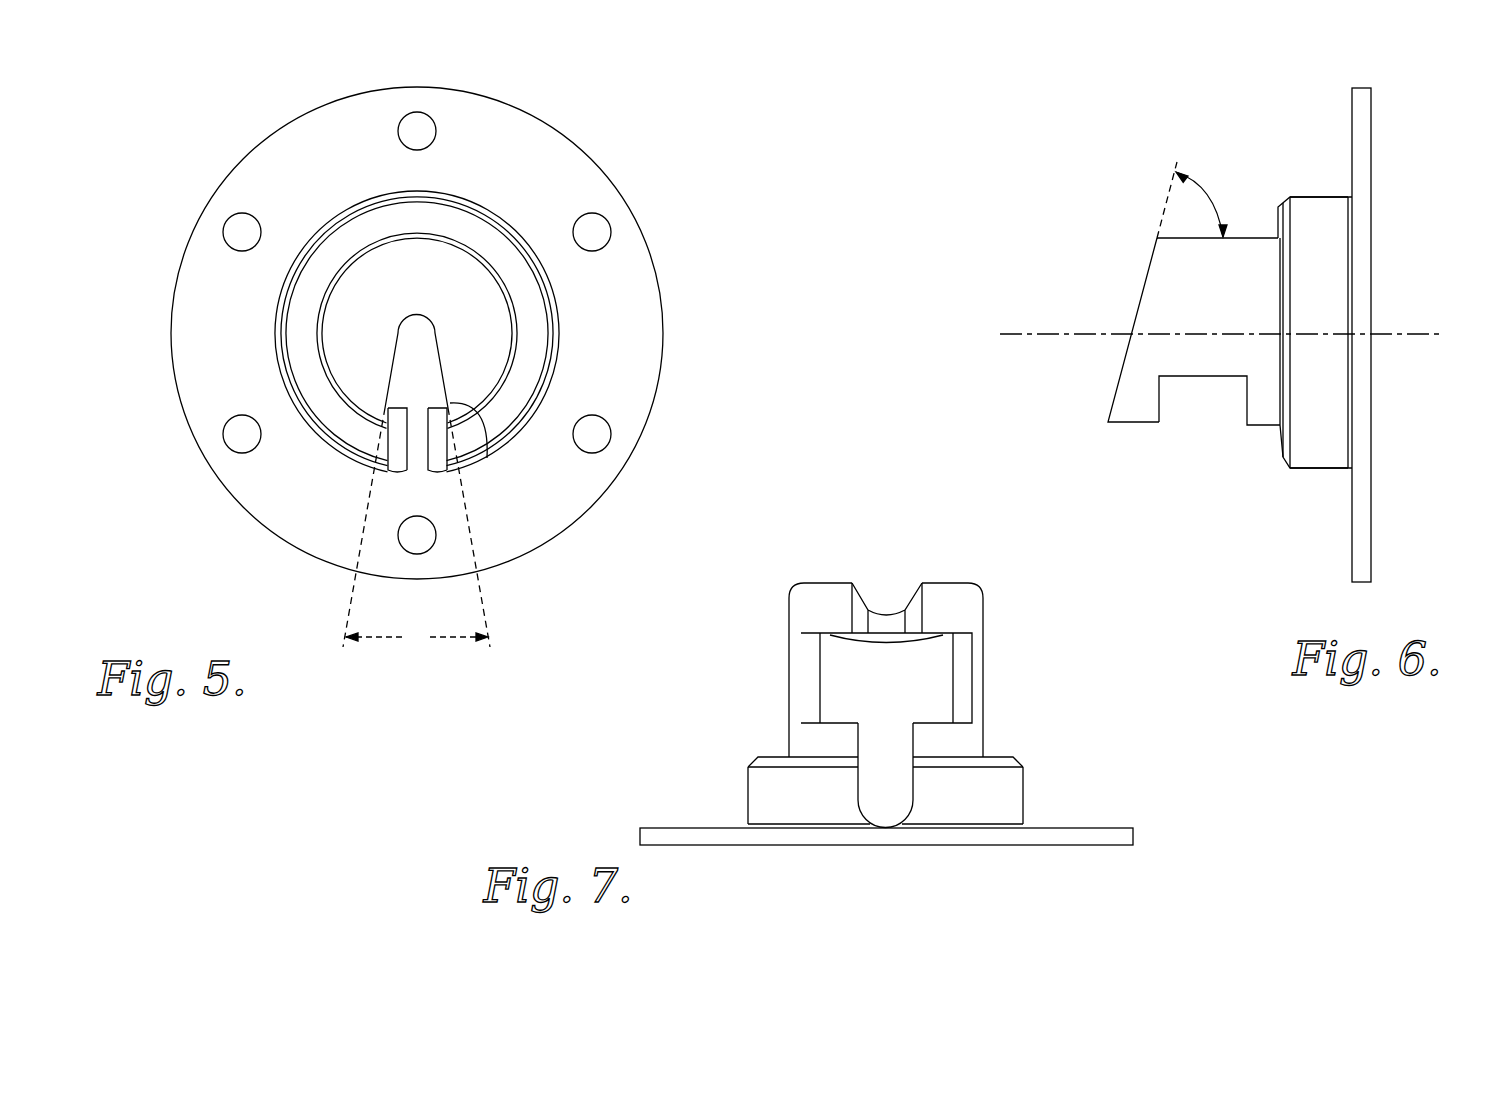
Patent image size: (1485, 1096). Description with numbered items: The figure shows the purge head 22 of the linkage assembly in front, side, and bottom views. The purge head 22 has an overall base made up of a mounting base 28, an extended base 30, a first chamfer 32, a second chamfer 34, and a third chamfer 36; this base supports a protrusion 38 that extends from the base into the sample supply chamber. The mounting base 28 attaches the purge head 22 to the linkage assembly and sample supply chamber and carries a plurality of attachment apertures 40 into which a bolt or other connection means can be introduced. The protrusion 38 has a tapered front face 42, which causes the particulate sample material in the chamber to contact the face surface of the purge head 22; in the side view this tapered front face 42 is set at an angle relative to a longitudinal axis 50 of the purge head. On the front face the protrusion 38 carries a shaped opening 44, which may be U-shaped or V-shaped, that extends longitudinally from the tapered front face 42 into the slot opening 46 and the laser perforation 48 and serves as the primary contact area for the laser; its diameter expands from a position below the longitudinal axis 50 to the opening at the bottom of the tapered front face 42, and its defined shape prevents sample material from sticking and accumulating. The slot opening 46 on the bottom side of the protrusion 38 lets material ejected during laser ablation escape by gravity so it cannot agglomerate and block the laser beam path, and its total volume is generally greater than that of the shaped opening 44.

In FIG. 5, the purge head 22 is at (438, 351).
In FIG. 6, the purge head 22 is at (1229, 318).
In FIG. 7, the purge head 22 is at (949, 692).
In FIG. 5, the mounting base 28 is at (663, 300).
In FIG. 6, the mounting base 28 is at (1371, 110).
In FIG. 7, the mounting base 28 is at (1130, 830).
In FIG. 5, the extended base 30 is at (303, 352).
In FIG. 6, the extended base 30 is at (1313, 468).
In FIG. 7, the extended base 30 is at (1025, 783).
In FIG. 6, the first chamfer 32 is at (1350, 470).
In FIG. 7, the first chamfer 32 is at (1025, 826).
In FIG. 6, the second chamfer 34 is at (1285, 462).
In FIG. 7, the second chamfer 34 is at (1018, 760).
In FIG. 7, the third chamfer 36 is at (983, 757).
In FIG. 6, the protrusion 38 is at (1252, 237).
In FIG. 7, the protrusion 38 is at (985, 623).
In FIG. 5, the attachment apertures 40 is at (410, 113).
In FIG. 5, the tapered front face 42 is at (516, 349).
In FIG. 6, the tapered front face 42 is at (1146, 280).
In FIG. 7, the tapered front face 42 is at (945, 583).
In FIG. 5, the shaped opening 44 is at (417, 440).
In FIG. 7, the shaped opening 44 is at (883, 575).
In FIG. 6, the slot opening 46 is at (1172, 422).
In FIG. 7, the slot opening 46 is at (905, 679).
In FIG. 5, the laser perforation 48 is at (487, 457).
In FIG. 7, the laser perforation 48 is at (890, 830).
In FIG. 6, the longitudinal axis 50 is at (1424, 331).